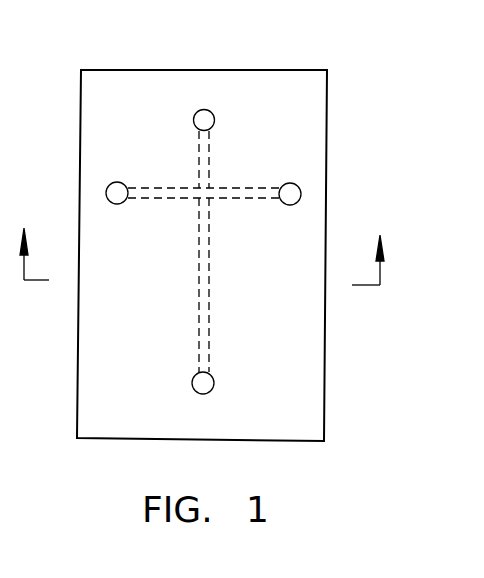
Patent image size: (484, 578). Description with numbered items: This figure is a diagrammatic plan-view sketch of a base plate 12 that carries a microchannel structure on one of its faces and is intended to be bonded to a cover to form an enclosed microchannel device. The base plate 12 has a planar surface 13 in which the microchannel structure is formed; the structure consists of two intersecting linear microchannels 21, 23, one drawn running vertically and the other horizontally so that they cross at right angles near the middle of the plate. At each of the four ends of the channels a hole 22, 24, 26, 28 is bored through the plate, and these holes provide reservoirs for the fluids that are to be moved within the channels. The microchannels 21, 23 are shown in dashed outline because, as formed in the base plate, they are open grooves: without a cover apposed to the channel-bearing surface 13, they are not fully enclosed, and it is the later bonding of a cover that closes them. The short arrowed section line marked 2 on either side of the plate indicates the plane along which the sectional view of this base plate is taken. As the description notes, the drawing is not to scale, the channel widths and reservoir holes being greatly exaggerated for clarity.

The section line 2- 2 is at (203, 242).
The base plate 12 is at (326, 84).
The planar surface 13 is at (305, 121).
The linear microchannel 21 is at (212, 158).
The hole 22 is at (199, 110).
The linear microchannel 23 is at (250, 188).
The hole 24 is at (106, 192).
The hole 26 is at (301, 191).
The hole 28 is at (214, 381).